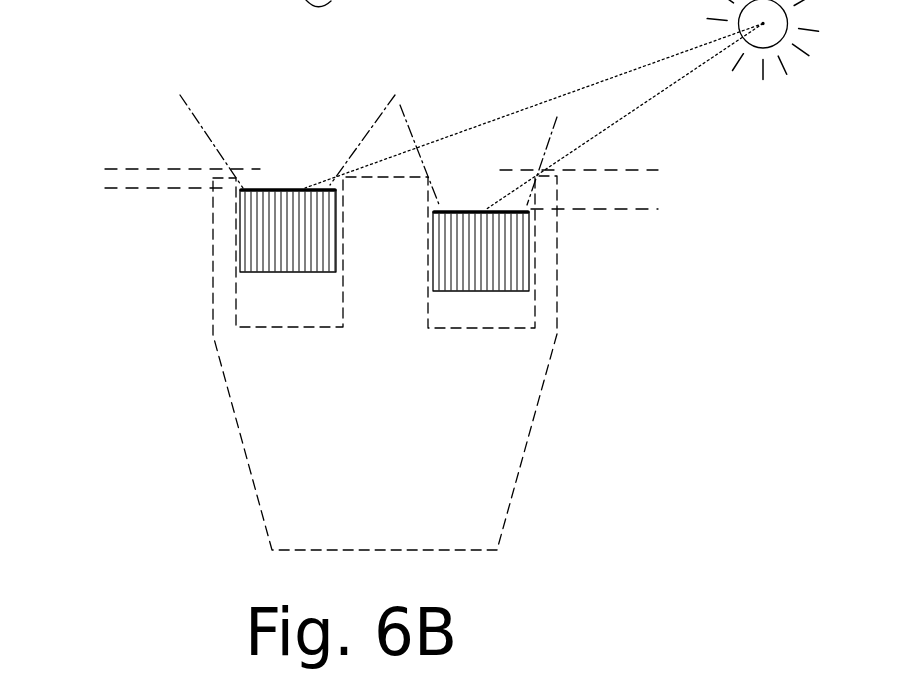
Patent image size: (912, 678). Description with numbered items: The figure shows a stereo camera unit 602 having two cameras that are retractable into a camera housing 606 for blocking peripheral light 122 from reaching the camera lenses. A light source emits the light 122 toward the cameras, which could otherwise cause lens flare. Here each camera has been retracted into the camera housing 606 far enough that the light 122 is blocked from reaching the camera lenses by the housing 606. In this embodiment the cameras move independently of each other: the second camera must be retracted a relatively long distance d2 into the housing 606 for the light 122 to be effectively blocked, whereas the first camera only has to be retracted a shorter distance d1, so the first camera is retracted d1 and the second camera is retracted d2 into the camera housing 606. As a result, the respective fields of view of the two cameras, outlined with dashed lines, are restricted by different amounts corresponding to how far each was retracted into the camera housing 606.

The stereo camera unit 602 is at (138, 18).
The camera housing 606 is at (557, 243).
The light 122 is at (613, 119).
The distance d1 is at (168, 180).
The distance d2 is at (580, 189).